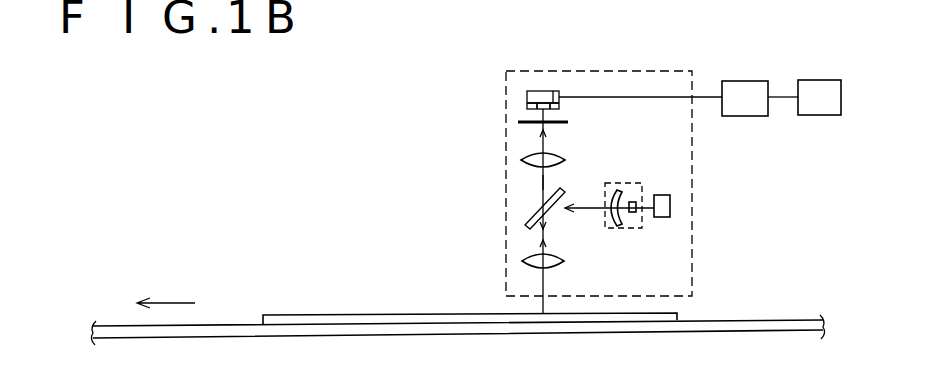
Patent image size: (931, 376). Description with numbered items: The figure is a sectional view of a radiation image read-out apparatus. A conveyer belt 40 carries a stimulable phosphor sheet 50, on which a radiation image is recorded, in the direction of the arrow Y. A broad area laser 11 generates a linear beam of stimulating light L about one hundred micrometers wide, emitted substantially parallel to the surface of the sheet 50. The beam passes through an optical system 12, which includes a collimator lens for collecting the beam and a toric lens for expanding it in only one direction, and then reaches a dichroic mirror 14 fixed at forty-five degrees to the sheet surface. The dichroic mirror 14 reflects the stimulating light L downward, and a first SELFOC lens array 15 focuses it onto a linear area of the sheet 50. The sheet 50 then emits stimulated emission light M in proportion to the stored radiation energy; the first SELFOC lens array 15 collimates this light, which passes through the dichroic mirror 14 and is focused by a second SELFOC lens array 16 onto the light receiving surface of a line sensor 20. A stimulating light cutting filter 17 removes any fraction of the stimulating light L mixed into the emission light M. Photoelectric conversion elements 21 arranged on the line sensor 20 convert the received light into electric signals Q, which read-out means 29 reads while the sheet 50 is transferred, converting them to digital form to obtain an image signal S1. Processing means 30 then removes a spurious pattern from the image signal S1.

The broad area laser 11 is at (672, 200).
The optical system 12 is at (629, 183).
The dichroic mirror 14 is at (528, 227).
The first SELFOC lens array 15 is at (565, 262).
The second SELFOC lens array 16 is at (522, 158).
The stimulating light cutting filter 17 is at (520, 122).
The line sensor 20 is at (520, 92).
The photoelectric conversion elements 21 is at (544, 91).
The read-out means 29 is at (748, 81).
The processing means 30 is at (823, 80).
The conveyer belt 40 is at (765, 320).
The stimulable phosphor sheet 50 is at (318, 315).
The stimulating light L is at (592, 208).
The stimulated emission light M is at (541, 182).
The electric signal Q is at (650, 97).
The image signal S1 is at (783, 97).
The transfer direction Y is at (170, 303).